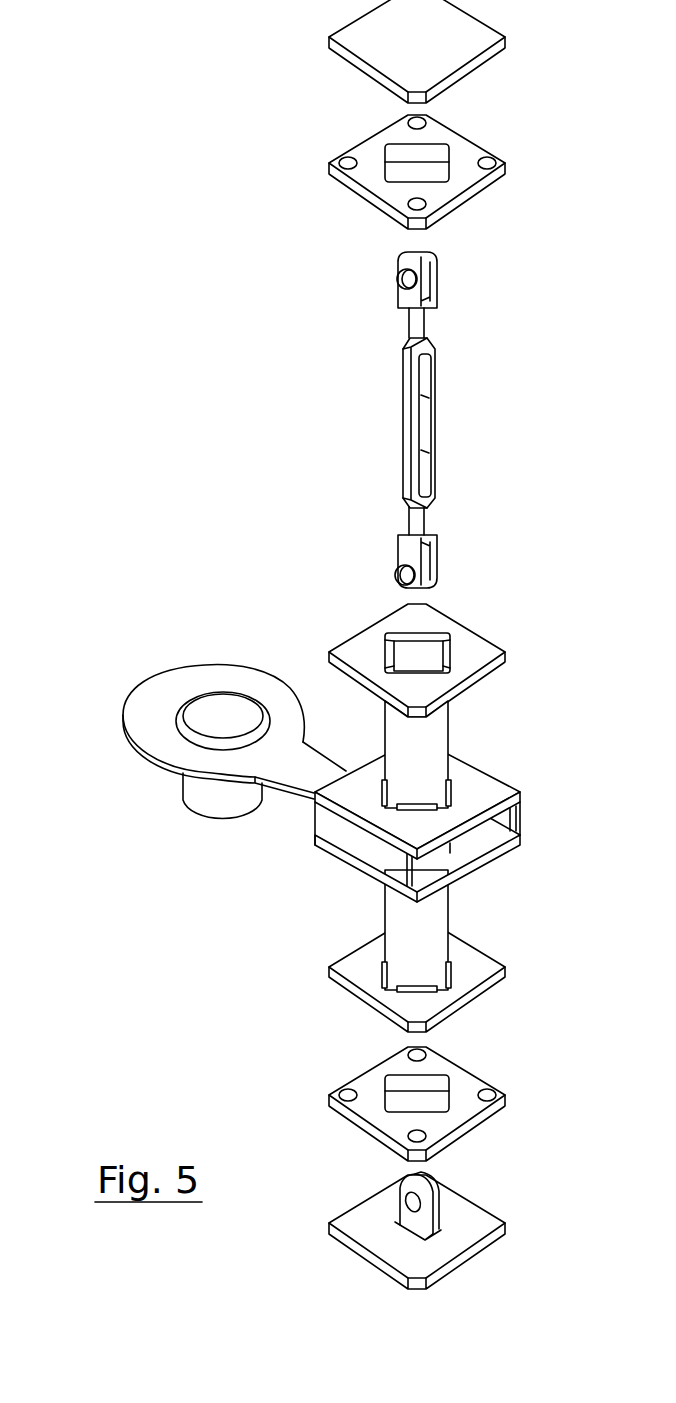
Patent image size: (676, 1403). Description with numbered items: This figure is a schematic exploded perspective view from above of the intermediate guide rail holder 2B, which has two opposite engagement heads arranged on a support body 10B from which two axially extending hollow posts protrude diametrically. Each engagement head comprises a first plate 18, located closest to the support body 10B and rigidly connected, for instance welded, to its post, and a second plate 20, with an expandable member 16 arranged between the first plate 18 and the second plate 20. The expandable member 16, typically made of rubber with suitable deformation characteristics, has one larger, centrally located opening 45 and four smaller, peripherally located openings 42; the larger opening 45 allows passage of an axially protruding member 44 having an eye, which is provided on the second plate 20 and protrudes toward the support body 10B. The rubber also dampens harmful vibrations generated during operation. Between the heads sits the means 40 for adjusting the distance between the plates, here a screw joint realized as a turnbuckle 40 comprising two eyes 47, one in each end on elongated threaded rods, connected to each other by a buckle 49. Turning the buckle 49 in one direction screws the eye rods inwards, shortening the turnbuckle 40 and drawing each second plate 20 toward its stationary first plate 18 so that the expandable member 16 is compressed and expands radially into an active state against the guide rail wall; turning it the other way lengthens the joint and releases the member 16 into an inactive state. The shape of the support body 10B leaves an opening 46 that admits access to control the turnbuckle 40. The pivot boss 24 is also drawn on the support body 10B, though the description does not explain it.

The guide rail holder 2B is at (161, 326).
The second plate 20 is at (483, 37).
The expandable member 16 is at (426, 628).
The first plate 18 is at (495, 655).
The smaller peripherally located openings 42 is at (340, 162).
The larger centrally located opening 45 is at (408, 152).
The axially protruding member having an eye 44 is at (403, 1200).
The means for adjusting the distance / turnbuckle 40 is at (446, 420).
The eyes 47 is at (400, 287).
The buckle 49 is at (408, 413).
The opening 46 is at (473, 838).
The support body 10B is at (234, 772).
The pivot boss 24 is at (200, 802).